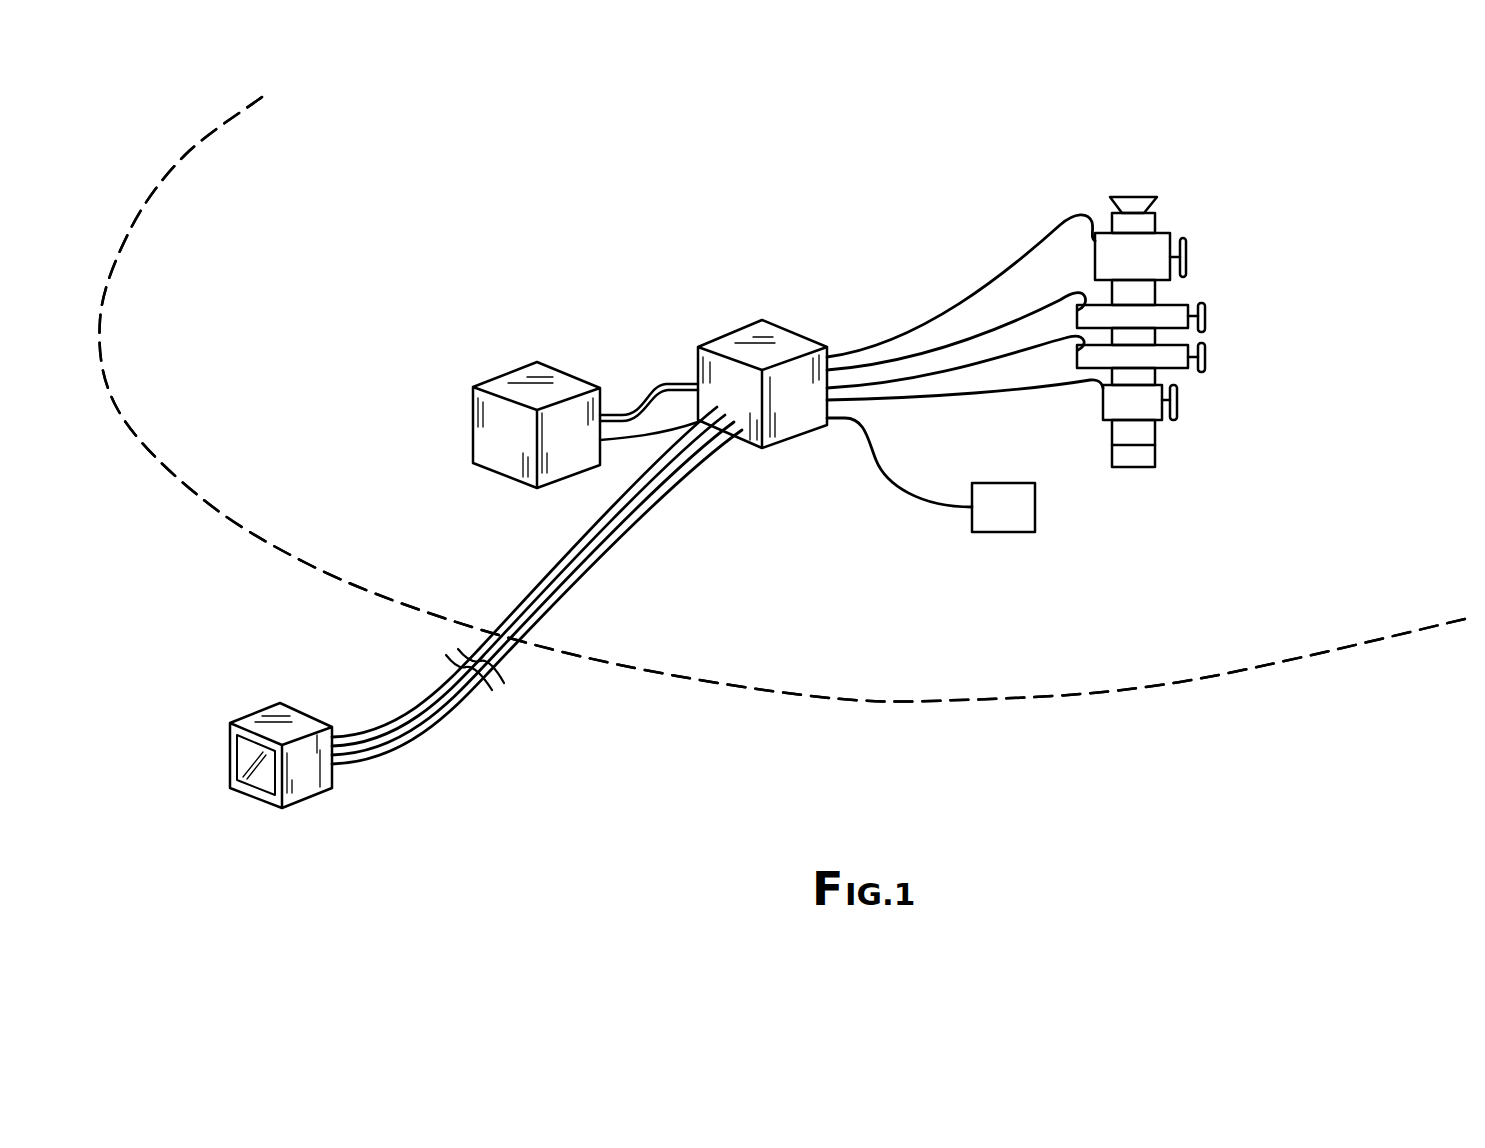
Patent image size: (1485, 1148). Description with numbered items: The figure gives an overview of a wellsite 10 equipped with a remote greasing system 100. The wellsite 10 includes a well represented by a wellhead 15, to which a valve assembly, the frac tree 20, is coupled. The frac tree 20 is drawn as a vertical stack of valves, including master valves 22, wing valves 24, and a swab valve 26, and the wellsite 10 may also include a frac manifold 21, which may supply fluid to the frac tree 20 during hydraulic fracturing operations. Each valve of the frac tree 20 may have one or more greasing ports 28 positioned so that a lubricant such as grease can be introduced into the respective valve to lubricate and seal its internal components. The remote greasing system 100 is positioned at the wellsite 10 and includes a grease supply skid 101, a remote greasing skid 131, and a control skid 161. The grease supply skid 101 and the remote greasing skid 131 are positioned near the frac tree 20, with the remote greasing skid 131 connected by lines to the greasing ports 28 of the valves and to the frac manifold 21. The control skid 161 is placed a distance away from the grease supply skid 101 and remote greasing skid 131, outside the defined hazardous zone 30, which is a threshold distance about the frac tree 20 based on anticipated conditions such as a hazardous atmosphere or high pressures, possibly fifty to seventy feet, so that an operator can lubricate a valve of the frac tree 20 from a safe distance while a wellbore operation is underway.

The remote greasing system 100 is at (373, 338).
The hazardous zone 30 is at (822, 696).
The wellsite 10 is at (1087, 600).
The frac tree 20 is at (1192, 303).
The swab valve 26 is at (1186, 257).
The wing valves 24 is at (1208, 352).
The master valves 22 is at (1180, 400).
The wellhead 15 is at (1158, 450).
The greasing ports 28 is at (1080, 240).
The frac manifold 21 is at (1037, 505).
The remote greasing skid 131 is at (733, 328).
The grease supply skid 101 is at (518, 365).
The control skid 161 is at (258, 712).